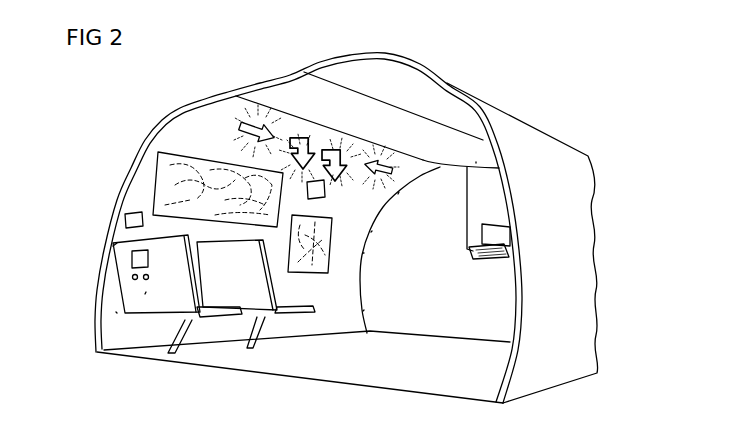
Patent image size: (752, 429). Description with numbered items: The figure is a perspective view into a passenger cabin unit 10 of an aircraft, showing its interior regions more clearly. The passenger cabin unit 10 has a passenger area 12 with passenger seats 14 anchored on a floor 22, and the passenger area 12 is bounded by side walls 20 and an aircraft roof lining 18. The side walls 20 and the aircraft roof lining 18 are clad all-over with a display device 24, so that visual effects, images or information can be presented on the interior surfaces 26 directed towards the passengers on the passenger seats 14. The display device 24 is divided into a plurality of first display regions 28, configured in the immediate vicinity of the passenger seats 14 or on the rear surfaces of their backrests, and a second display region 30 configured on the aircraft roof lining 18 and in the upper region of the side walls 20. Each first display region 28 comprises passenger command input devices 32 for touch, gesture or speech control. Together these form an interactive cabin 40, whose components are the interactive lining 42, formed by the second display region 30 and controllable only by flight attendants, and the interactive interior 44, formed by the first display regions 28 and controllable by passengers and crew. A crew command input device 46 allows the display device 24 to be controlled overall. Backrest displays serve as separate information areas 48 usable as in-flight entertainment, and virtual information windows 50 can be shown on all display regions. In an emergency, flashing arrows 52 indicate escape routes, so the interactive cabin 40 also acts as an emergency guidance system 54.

The passenger cabin unit 10 is at (509, 99).
The passenger area 12 is at (277, 355).
The passenger seats 14 is at (293, 320).
The aircraft roof lining 18 is at (433, 162).
The side walls 20 is at (359, 276).
The floor 22 is at (440, 337).
The display device 24 is at (146, 292).
The interior surfaces 26 is at (476, 162).
The first display regions 28 is at (141, 176).
The second display region 30 is at (299, 84).
The passenger command input devices 32 is at (141, 191).
The interactive cabin 40 is at (472, 83).
The interactive lining 42 is at (116, 312).
The interactive interior 44 is at (234, 97).
The crew command input device 46 is at (484, 262).
The separate information area 48 is at (117, 243).
The virtual information window 50 is at (125, 219).
The flashing arrows 52 is at (366, 162).
The emergency guidance system 54 is at (354, 131).